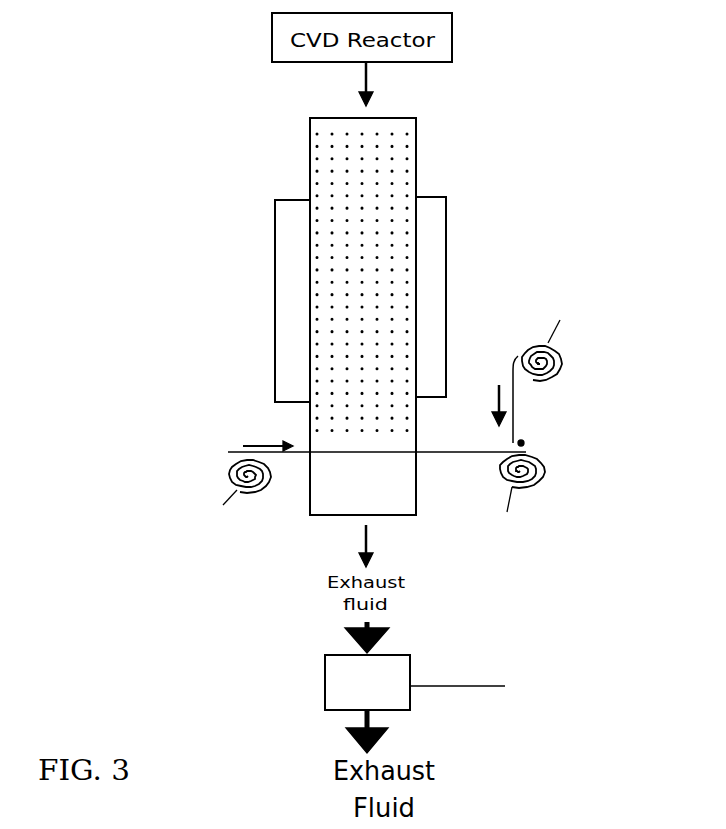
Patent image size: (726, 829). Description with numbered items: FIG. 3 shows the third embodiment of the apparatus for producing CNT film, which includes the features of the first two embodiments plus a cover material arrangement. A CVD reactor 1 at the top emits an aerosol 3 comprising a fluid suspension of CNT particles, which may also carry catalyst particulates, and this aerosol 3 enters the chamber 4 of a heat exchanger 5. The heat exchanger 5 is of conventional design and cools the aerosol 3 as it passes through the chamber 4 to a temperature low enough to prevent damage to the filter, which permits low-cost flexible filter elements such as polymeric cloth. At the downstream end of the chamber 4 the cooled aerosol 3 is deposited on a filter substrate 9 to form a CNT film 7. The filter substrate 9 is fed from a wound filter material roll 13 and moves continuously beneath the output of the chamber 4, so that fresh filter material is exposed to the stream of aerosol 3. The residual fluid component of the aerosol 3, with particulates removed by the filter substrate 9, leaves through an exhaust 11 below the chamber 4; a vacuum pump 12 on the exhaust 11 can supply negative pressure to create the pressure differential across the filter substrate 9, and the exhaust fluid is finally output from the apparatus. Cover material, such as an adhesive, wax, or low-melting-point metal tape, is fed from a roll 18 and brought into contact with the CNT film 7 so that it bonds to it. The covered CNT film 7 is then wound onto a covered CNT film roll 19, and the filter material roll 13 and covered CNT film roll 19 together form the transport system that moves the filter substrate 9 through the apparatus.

The CVD reactor 1 is at (366, 76).
The aerosol 3 is at (387, 180).
The chamber 4 is at (290, 145).
The heat exchanger 5 is at (447, 248).
The CNT film 7 is at (430, 448).
The filter substrate 9 is at (303, 451).
The exhaust 11 is at (366, 535).
The vacuum pump 12 is at (473, 683).
The filter material roll 13 is at (150, 527).
The roll 18 is at (637, 313).
The covered CNT film roll 19 is at (566, 550).